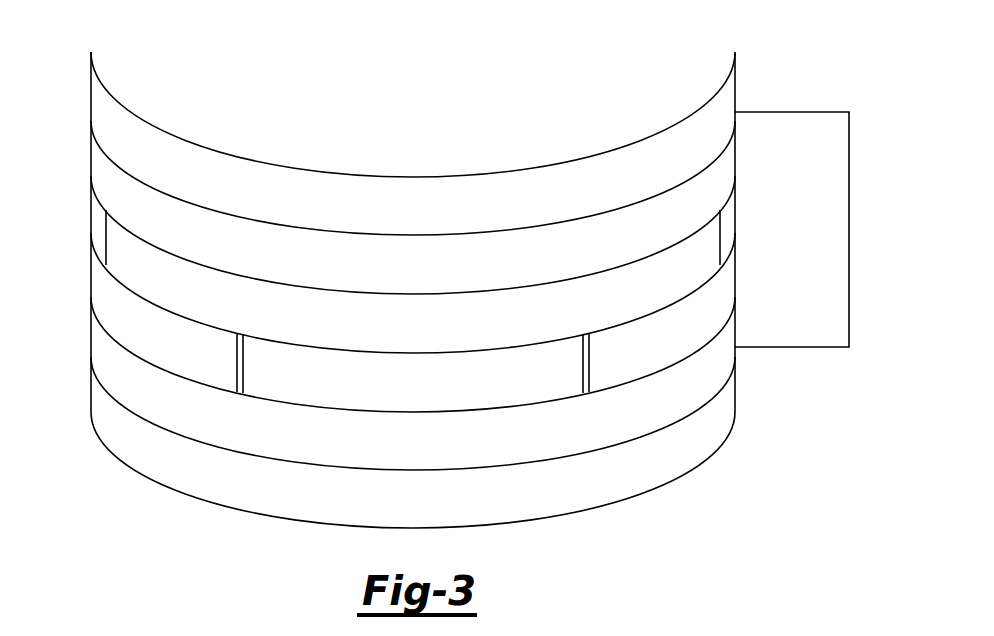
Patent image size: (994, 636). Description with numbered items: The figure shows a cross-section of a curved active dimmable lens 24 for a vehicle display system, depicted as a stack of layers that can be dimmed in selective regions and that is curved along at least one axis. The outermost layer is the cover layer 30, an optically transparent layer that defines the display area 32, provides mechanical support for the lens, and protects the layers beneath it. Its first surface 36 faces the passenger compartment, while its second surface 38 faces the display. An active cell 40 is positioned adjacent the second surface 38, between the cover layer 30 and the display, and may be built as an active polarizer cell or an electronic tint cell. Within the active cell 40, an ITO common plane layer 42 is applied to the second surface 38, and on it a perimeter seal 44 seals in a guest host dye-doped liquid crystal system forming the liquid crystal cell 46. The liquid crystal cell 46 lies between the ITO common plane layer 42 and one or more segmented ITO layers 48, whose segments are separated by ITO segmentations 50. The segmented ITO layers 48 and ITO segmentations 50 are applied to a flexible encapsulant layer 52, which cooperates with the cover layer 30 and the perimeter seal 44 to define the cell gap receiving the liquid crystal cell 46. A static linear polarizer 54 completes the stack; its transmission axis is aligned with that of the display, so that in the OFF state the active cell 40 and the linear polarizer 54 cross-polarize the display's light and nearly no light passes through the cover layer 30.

The curved active dimmable lens 24 is at (604, 66).
The cover layer 30 is at (401, 219).
The display area 32 is at (223, 113).
The first surface 36 is at (428, 148).
The second surface 38 is at (521, 225).
The active cell 40 is at (850, 230).
The ITO common plane layer 42 is at (401, 279).
The perimeter seal 44 is at (97, 233).
The liquid crystal cell 46 is at (401, 339).
The segmented ITO layers 48 is at (401, 398).
The ITO segmentations 50 is at (240, 390).
The flexible encapsulant layer 52 is at (401, 456).
The linear polarizer 54 is at (401, 514).